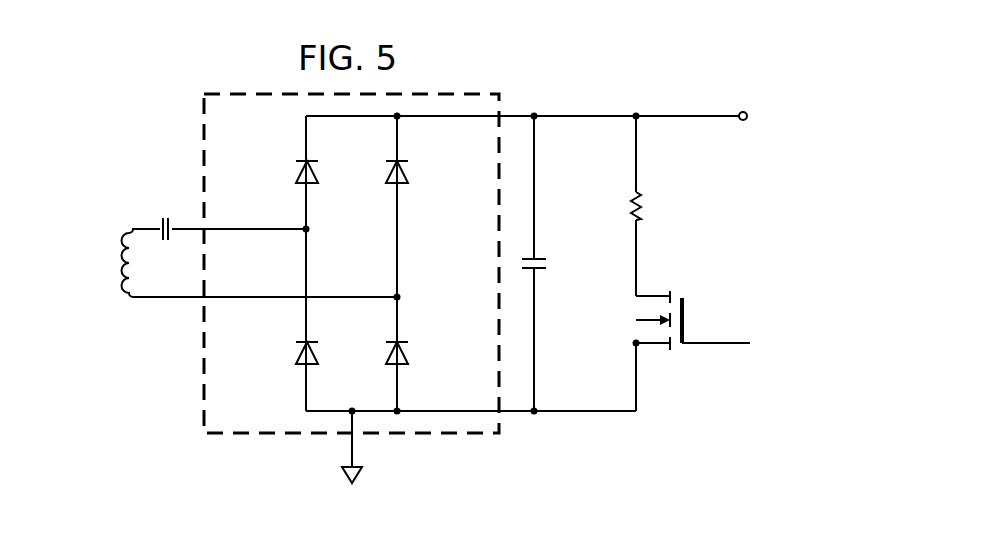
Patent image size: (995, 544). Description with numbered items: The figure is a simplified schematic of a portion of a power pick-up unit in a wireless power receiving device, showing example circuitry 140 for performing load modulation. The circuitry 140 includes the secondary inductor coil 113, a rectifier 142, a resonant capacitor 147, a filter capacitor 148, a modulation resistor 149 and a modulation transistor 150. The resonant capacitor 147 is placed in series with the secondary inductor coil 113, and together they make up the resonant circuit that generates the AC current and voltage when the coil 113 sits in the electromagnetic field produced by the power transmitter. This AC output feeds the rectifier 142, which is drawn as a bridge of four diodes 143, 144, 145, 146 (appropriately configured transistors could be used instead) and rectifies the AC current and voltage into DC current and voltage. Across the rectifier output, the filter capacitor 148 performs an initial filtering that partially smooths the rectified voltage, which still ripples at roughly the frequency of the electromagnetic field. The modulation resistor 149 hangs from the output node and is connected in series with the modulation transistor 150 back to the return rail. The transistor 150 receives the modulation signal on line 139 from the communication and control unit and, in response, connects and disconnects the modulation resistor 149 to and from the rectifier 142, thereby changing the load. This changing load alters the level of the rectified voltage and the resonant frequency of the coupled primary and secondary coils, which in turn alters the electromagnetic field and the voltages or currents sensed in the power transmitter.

The circuitry 140 is at (601, 71).
The rectifier 142 is at (244, 93).
The secondary inductor coil 113 is at (123, 258).
The resonant capacitor 147 is at (163, 216).
The diode 143 is at (297, 172).
The diode 144 is at (406, 174).
The diode 145 is at (297, 354).
The diode 146 is at (406, 354).
The filter capacitor 148 is at (548, 264).
The modulation resistor 149 is at (645, 207).
The modulation transistor 150 is at (684, 306).
The line 139 is at (716, 345).